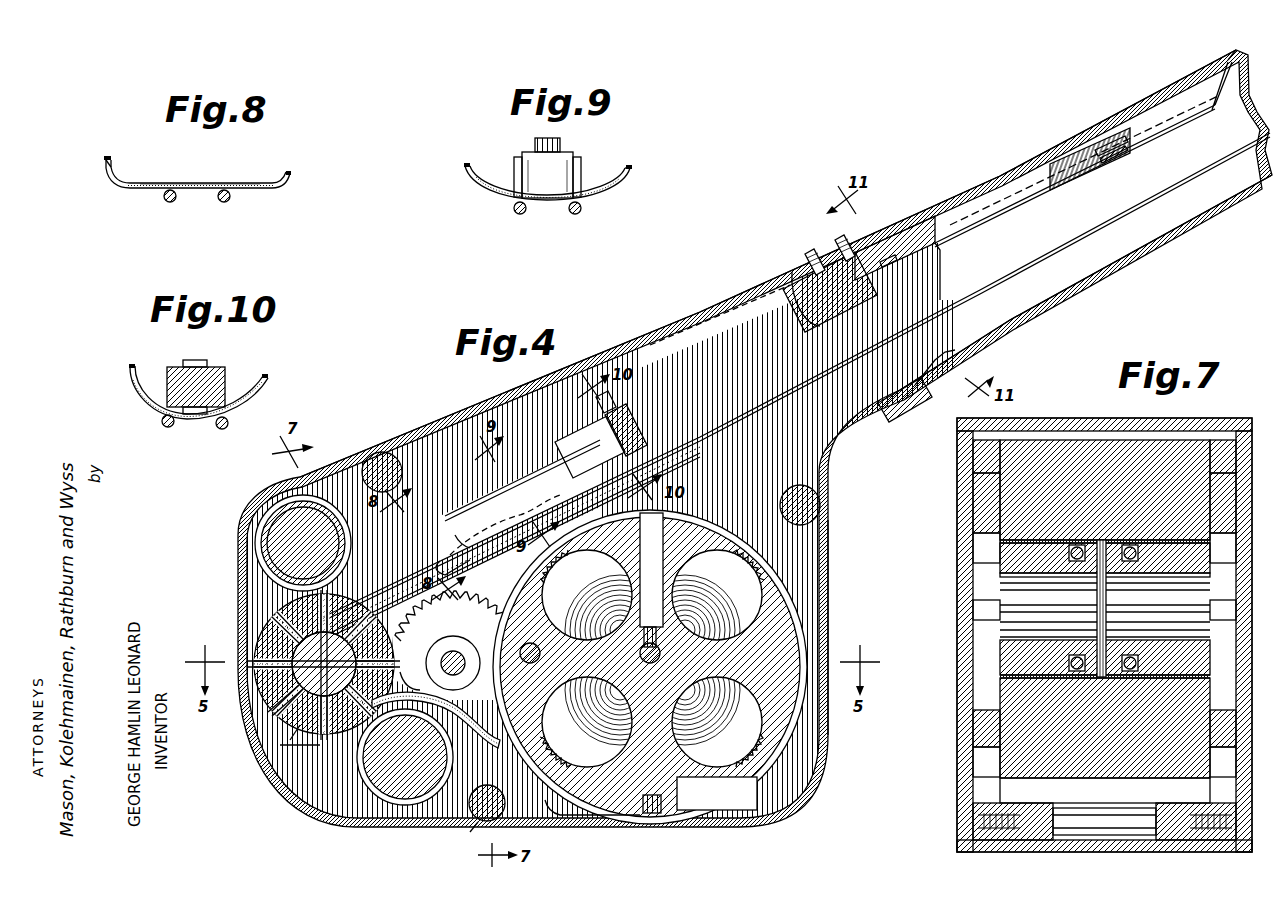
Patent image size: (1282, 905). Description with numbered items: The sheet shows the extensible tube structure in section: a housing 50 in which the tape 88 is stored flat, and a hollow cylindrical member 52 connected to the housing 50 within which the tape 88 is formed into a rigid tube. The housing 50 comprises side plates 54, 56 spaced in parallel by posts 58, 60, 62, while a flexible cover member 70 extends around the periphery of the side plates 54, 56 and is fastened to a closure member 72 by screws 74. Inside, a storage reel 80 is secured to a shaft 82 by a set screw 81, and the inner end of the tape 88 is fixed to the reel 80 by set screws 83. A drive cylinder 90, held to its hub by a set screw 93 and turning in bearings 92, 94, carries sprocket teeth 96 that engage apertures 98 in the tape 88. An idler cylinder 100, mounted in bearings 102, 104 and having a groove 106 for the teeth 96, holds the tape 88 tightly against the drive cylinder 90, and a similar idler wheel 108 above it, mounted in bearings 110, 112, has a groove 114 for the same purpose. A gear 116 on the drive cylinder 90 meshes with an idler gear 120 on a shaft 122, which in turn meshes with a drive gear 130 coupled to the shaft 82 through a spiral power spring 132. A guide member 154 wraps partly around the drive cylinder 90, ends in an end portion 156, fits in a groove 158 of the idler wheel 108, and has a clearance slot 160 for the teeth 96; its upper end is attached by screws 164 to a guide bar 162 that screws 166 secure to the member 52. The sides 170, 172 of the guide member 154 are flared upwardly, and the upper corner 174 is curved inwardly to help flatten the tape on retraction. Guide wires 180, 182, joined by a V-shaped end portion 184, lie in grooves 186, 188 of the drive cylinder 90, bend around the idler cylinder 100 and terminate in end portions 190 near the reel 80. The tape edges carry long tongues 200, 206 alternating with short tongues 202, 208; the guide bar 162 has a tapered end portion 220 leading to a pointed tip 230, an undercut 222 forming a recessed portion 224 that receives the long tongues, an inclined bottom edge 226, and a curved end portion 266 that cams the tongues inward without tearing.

In FIG. 7, the housing 50 is at (1162, 418).
In FIG. 4, the housing 50 is at (600, 352).
In FIG. 4, the hollow cylindrical member 52 is at (1148, 236).
In FIG. 7, the side plate 54 is at (1250, 418).
In FIG. 7, the side plate 56 is at (1000, 645).
In FIG. 4, the side plate 56 is at (822, 528).
In FIG. 4, the post 58 is at (820, 505).
In FIG. 4, the post 60 is at (380, 452).
In FIG. 7, the post 62 is at (1190, 806).
In FIG. 4, the post 62 is at (476, 824).
In FIG. 7, the flexible cover member 70 is at (1150, 425).
In FIG. 4, the flexible cover member 70 is at (425, 432).
In FIG. 4, the closure member 72 is at (918, 392).
In FIG. 4, the screw 74 is at (824, 262).
In FIG. 4, the storage reel 80 is at (806, 760).
In FIG. 4, the set screw 81 is at (606, 616).
In FIG. 4, the shaft 82 is at (725, 626).
In FIG. 4, the set screw 83 is at (655, 815).
In FIG. 8, the tape 88 is at (118, 185).
In FIG. 9, the tape 88 is at (472, 190).
In FIG. 10, the tape 88 is at (262, 380).
In FIG. 7, the tape 88 is at (1190, 672).
In FIG. 4, the tape 88 is at (510, 770).
In FIG. 7, the drive cylinder 90 is at (1000, 660).
In FIG. 4, the drive cylinder 90 is at (320, 748).
In FIG. 7, the bearing 92 is at (1245, 600).
In FIG. 4, the set screw 93 is at (300, 726).
In FIG. 7, the bearing 94 is at (995, 580).
In FIG. 7, the sprocket teeth 96 is at (1101, 640).
In FIG. 4, the sprocket teeth 96 is at (285, 640).
In FIG. 7, the aperture 98 is at (1100, 540).
In FIG. 4, the aperture 98 is at (1005, 268).
In FIG. 7, the idler cylinder 100 is at (1000, 690).
In FIG. 4, the idler cylinder 100 is at (368, 785).
In FIG. 7, the bearing 102 is at (1240, 718).
In FIG. 7, the bearing 104 is at (1000, 720).
In FIG. 7, the groove 106 is at (1100, 778).
In FIG. 4, the groove 106 is at (392, 800).
In FIG. 7, the idler wheel 108 is at (1222, 440).
In FIG. 4, the idler wheel 108 is at (258, 508).
In FIG. 7, the bearing 110 is at (1248, 470).
In FIG. 7, the bearing 112 is at (985, 478).
In FIG. 7, the groove 114 is at (1105, 440).
In FIG. 4, the groove 114 is at (267, 542).
In FIG. 7, the gear 116 is at (995, 555).
In FIG. 4, the idler gear 120 is at (498, 612).
In FIG. 4, the shaft 122 is at (480, 628).
In FIG. 4, the drive gear 130 is at (548, 815).
In FIG. 4, the spiral power spring 132 is at (700, 730).
In FIG. 8, the guide member 154 is at (192, 183).
In FIG. 9, the guide member 154 is at (495, 186).
In FIG. 7, the guide member 154 is at (990, 528).
In FIG. 4, the guide member 154 is at (440, 490).
In FIG. 4, the end portion 156 is at (275, 727).
In FIG. 7, the groove 158 is at (1010, 440).
In FIG. 4, the groove 158 is at (262, 523).
In FIG. 7, the clearance slot 160 is at (1210, 540).
In FIG. 4, the clearance slot 160 is at (268, 703).
In FIG. 9, the guide bar 162 is at (578, 152).
In FIG. 10, the guide bar 162 is at (224, 368).
In FIG. 4, the guide bar 162 is at (716, 322).
In FIG. 9, the screw 164 is at (540, 138).
In FIG. 4, the screw 164 is at (600, 404).
In FIG. 4, the screw 166 is at (828, 262).
In FIG. 8, the side 170 is at (122, 172).
In FIG. 9, the side 170 is at (474, 166).
In FIG. 4, the side 170 is at (462, 500).
In FIG. 8, the side 172 is at (288, 172).
In FIG. 9, the side 172 is at (624, 163).
In FIG. 4, the upper corner 174 is at (576, 446).
In FIG. 8, the guide wire 180 is at (165, 201).
In FIG. 9, the guide wire 180 is at (515, 212).
In FIG. 10, the guide wire 180 is at (165, 428).
In FIG. 7, the guide wire 180 is at (1077, 560).
In FIG. 4, the guide wire 180 is at (462, 540).
In FIG. 8, the guide wire 182 is at (225, 202).
In FIG. 9, the guide wire 182 is at (577, 215).
In FIG. 10, the guide wire 182 is at (220, 430).
In FIG. 7, the guide wire 182 is at (1131, 560).
In FIG. 4, the V-shaped end portion 184 is at (952, 352).
In FIG. 7, the groove 186 is at (1072, 655).
In FIG. 4, the groove 186 is at (400, 670).
In FIG. 7, the groove 188 is at (1127, 655).
In FIG. 4, the end portion 190 is at (482, 738).
In FIG. 8, the long tongue 200 is at (105, 160).
In FIG. 10, the long tongue 200 is at (129, 367).
In FIG. 4, the long tongue 200 is at (1172, 142).
In FIG. 9, the short tongue 202 is at (464, 166).
In FIG. 4, the short tongue 202 is at (884, 258).
In FIG. 9, the long tongue 206 is at (632, 165).
In FIG. 8, the short tongue 208 is at (291, 175).
In FIG. 10, the short tongue 208 is at (266, 373).
In FIG. 4, the tapered end portion 220 is at (1090, 142).
In FIG. 4, the undercut 222 is at (945, 288).
In FIG. 4, the recessed portion 224 is at (965, 222).
In FIG. 4, the inclined bottom edge 226 is at (1126, 150).
In FIG. 4, the tip 230 is at (1228, 60).
In FIG. 4, the curved end portion 266 is at (1230, 95).